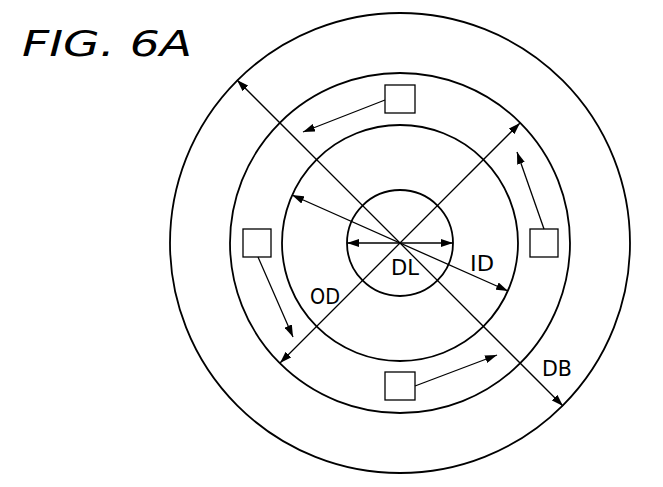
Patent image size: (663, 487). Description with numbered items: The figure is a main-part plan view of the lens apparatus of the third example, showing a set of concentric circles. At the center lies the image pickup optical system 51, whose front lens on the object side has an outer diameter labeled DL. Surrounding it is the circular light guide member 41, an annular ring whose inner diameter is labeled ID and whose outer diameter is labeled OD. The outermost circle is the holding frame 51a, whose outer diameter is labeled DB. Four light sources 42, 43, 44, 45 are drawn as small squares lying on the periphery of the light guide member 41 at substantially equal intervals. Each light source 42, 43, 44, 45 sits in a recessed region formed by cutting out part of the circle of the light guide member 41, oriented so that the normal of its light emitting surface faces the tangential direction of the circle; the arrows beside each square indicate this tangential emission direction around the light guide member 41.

The light guide member 41 is at (470, 107).
The light source 42 is at (257, 235).
The light source 43 is at (405, 377).
The light source 44 is at (548, 237).
The light source 45 is at (398, 92).
The image pickup optical system 51 is at (408, 202).
The holding frame 51a is at (587, 106).